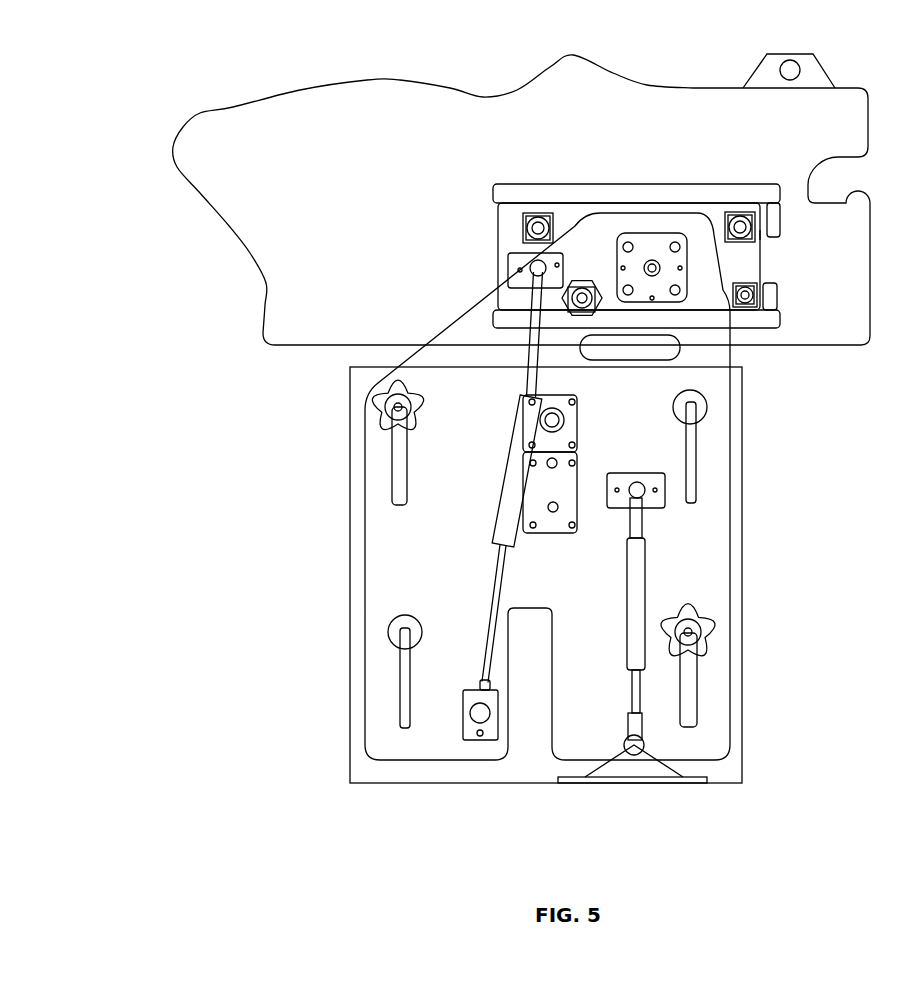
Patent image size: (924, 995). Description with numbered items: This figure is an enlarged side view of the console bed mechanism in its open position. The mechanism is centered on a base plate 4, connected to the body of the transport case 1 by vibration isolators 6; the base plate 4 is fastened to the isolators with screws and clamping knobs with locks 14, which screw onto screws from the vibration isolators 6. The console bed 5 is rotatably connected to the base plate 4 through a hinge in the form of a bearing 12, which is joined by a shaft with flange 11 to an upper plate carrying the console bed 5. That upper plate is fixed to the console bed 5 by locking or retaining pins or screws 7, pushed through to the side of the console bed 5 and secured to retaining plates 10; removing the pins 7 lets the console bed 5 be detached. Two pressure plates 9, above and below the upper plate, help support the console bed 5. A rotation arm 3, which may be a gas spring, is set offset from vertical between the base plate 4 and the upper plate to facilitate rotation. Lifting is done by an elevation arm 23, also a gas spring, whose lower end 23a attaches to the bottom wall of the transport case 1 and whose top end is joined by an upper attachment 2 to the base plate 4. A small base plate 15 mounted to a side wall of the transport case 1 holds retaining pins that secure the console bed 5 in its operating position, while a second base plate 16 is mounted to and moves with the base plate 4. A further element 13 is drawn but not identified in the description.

The transport case 1 is at (742, 477).
The upper attachment 2 is at (510, 270).
The rotation arm 3 is at (500, 505).
The base plate 4 is at (732, 377).
The console bed 5 is at (210, 150).
The vibration isolators 6 is at (570, 217).
The locking/retaining pins or screws 7 is at (757, 295).
The pressure plate 9 is at (768, 193).
The retaining plate 10 is at (762, 237).
The flange with shaft 11 is at (662, 268).
The bearing 12 is at (688, 307).
The hanging tab 13 is at (793, 62).
The clamping knob with a lock 14 is at (380, 402).
The small base plate 15 is at (547, 437).
The second base plate 16 is at (547, 515).
The elevation arm 23 is at (638, 662).
The lower end 23a is at (637, 745).